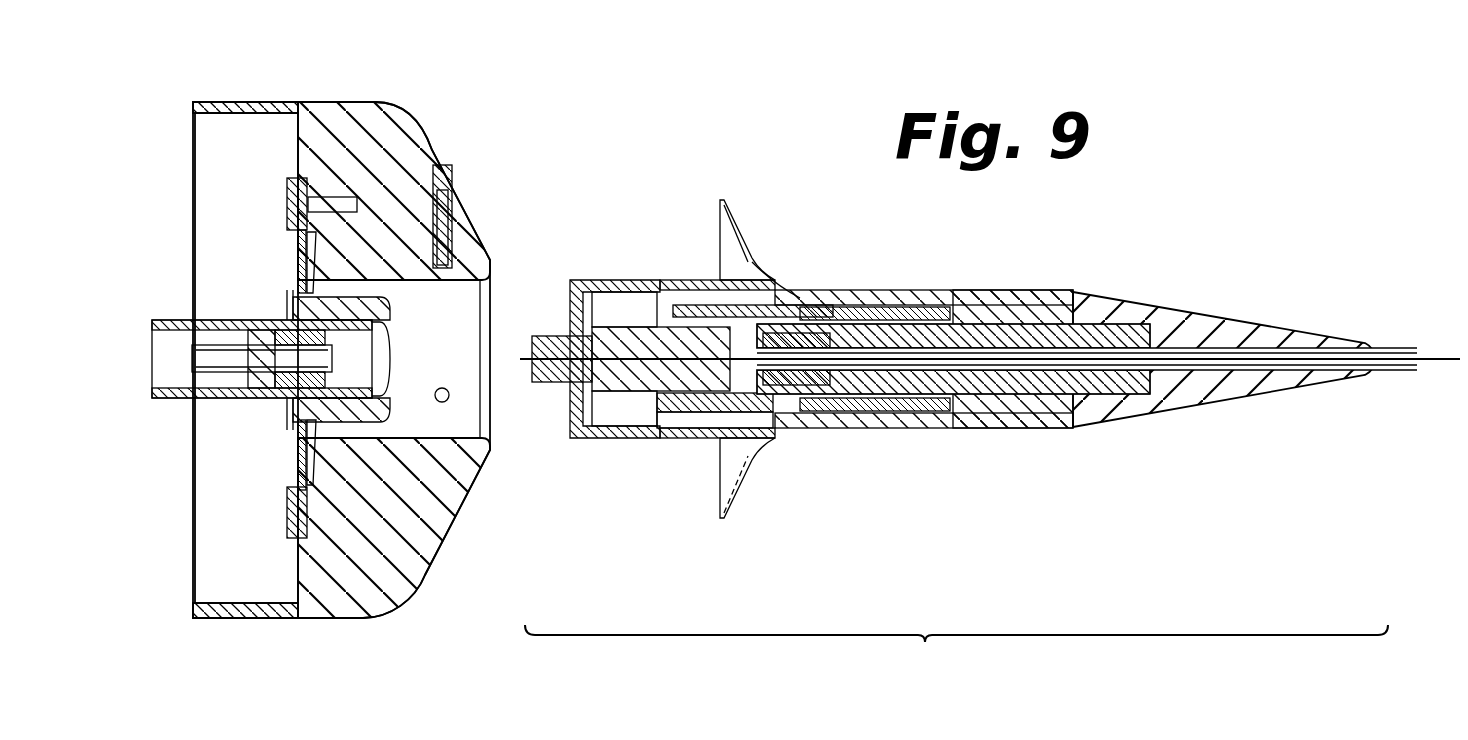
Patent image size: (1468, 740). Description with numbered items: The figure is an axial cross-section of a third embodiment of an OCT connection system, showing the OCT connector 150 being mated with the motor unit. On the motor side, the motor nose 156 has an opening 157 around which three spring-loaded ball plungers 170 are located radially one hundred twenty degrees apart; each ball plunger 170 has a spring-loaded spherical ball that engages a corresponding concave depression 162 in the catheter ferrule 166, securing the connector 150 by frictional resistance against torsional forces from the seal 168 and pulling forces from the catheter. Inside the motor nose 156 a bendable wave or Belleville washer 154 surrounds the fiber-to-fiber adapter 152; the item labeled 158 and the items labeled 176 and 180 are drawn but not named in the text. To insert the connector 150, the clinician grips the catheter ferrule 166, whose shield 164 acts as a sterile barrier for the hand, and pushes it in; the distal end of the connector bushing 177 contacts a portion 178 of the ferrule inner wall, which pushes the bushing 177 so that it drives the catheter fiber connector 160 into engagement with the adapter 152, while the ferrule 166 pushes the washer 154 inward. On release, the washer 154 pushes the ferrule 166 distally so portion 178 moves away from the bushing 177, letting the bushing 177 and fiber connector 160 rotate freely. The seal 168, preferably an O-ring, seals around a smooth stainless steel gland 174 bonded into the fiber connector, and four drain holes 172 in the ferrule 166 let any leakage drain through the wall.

The OCT connector 150 is at (956, 647).
The fiber-to-fiber adapter 152 is at (237, 326).
The bendable wave or Belleville washer 154 is at (298, 248).
The motor nose 156 is at (345, 140).
The opening 157 is at (476, 397).
The collar 158 is at (325, 334).
The catheter fiber connector 160 is at (628, 338).
The concave depression 162 is at (697, 283).
The shield 164 is at (750, 270).
The catheter ferrule 166 is at (810, 298).
The seal 168 is at (820, 345).
The spring-loaded ball plunger 170 is at (447, 227).
The drain hole 172 is at (802, 395).
The gland 174 is at (945, 425).
The needle 176 is at (1395, 368).
The connector bushing 177 is at (700, 415).
The portion of the inner wall 178 is at (950, 317).
The core 180 is at (992, 330).